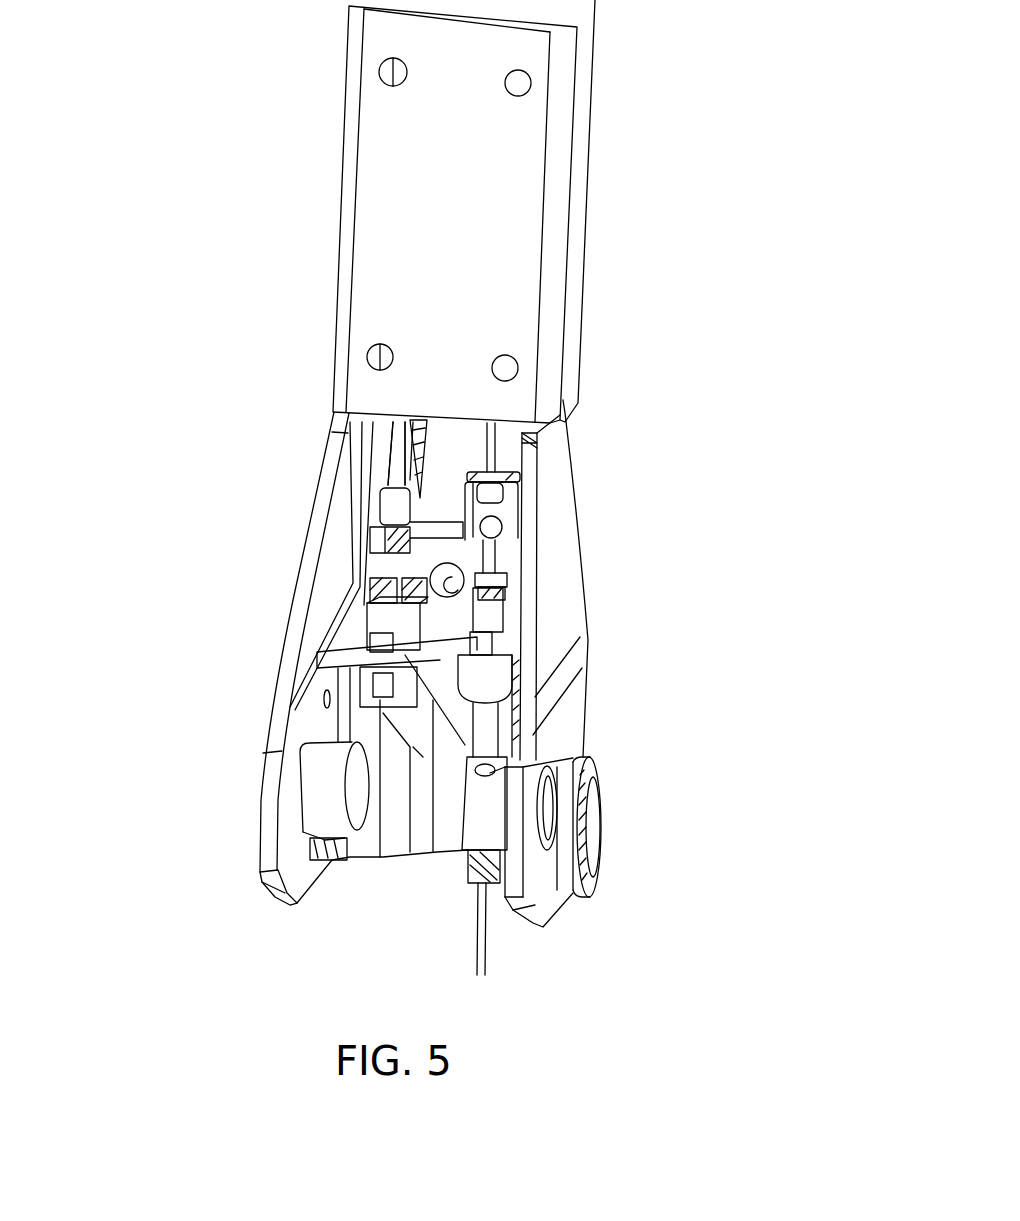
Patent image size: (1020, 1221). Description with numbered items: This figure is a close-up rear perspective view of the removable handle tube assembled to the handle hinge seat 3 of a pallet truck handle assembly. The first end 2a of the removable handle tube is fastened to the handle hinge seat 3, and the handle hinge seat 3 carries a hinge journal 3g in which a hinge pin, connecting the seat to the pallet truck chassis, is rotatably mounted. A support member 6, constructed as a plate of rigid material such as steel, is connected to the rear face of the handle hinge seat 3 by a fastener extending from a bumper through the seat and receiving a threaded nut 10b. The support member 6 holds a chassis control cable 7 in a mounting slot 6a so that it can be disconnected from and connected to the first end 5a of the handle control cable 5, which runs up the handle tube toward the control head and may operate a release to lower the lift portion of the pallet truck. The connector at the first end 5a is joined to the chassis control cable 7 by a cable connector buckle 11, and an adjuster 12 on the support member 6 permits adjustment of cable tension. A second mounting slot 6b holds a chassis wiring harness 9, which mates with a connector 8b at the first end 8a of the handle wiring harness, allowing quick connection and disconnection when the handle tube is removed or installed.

The first end of removable handle tube 2a is at (468, 240).
The handle hinge seat 3 is at (569, 474).
The hinge journal 3g is at (588, 844).
The handle control cable 5 is at (479, 447).
The first end of handle control cable 5a is at (493, 497).
The support member 6 is at (437, 625).
The mounting slot 6a is at (485, 642).
The mounting slot 6b is at (365, 643).
The chassis control cable 7 is at (405, 690).
The first end of handle wiring harness 8a is at (393, 460).
The connector 8b is at (370, 546).
The chassis wiring harness 9 is at (567, 779).
The threaded nut 10b is at (443, 573).
The cable connector buckle 11 is at (508, 483).
The adjuster 12 is at (488, 678).